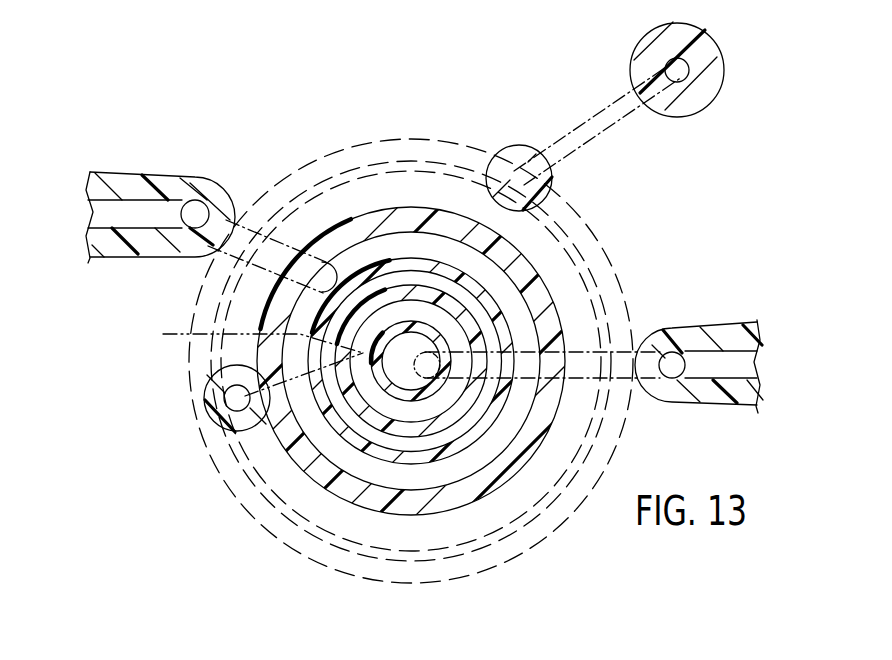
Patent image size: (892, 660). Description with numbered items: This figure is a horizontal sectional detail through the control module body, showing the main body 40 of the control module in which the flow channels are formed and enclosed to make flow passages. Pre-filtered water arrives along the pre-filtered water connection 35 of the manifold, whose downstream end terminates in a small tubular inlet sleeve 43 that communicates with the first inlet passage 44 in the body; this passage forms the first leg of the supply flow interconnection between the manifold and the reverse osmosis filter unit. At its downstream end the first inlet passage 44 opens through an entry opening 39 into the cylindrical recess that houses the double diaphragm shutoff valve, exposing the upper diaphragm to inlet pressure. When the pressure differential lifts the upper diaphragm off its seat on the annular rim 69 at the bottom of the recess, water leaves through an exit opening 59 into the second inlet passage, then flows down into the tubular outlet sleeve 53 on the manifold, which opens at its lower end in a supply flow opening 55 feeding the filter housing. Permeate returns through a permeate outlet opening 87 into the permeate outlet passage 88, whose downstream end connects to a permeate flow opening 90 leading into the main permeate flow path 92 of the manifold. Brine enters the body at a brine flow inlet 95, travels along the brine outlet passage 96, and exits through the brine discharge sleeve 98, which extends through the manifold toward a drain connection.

The pre-filtered water connection 35 is at (710, 365).
The entry opening 39 is at (443, 387).
The main body 40 is at (587, 240).
The tubular inlet sleeve 43 is at (672, 368).
The first inlet passage 44 is at (617, 325).
The tubular outlet sleeve 53 is at (210, 390).
The supply flow opening 55 is at (237, 403).
The exit opening 59 is at (244, 361).
The annular rim 69 is at (393, 393).
The permeate outlet opening 87 is at (328, 268).
The permeate outlet passage 88 is at (283, 232).
The permeate flow opening 90 is at (195, 212).
The main permeate flow path 92 is at (128, 217).
The brine flow inlet 95 is at (515, 168).
The brine outlet passage 96 is at (587, 123).
The brine discharge sleeve 98 is at (712, 36).